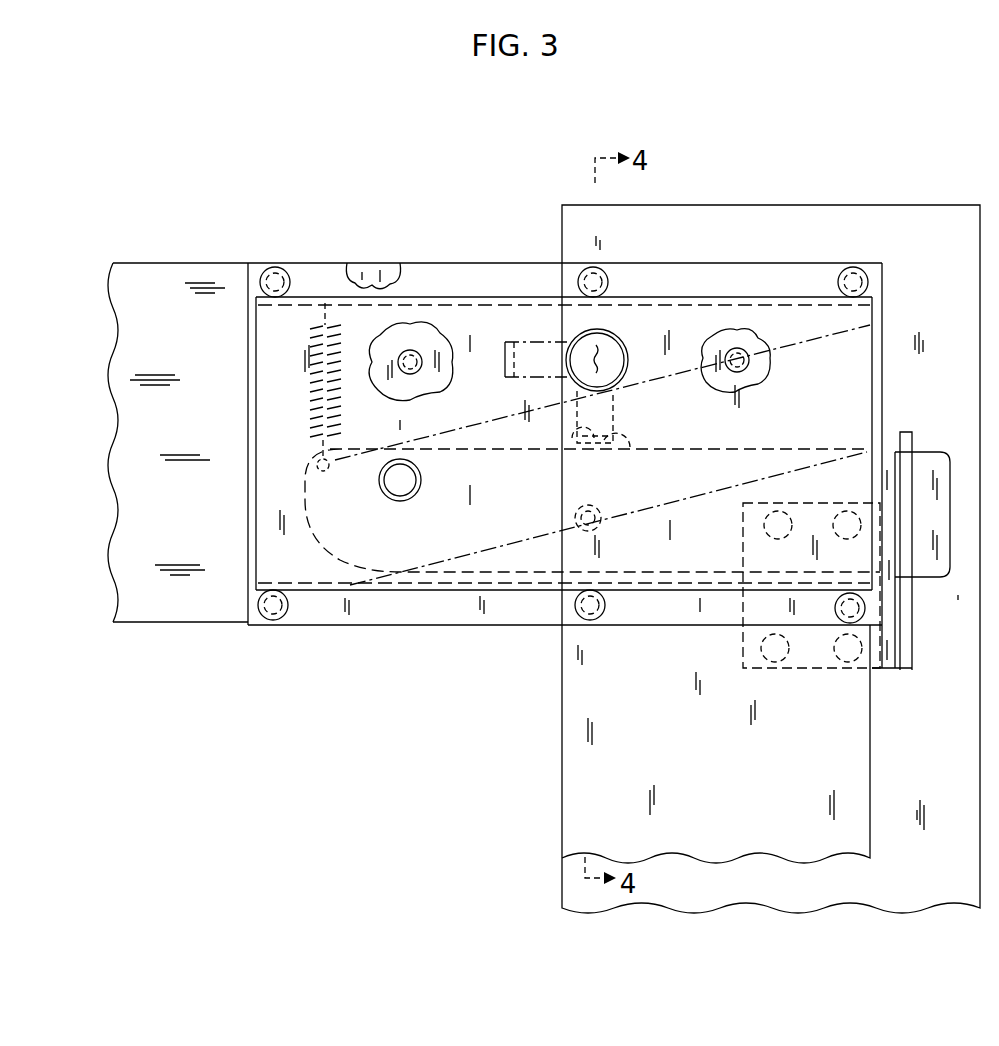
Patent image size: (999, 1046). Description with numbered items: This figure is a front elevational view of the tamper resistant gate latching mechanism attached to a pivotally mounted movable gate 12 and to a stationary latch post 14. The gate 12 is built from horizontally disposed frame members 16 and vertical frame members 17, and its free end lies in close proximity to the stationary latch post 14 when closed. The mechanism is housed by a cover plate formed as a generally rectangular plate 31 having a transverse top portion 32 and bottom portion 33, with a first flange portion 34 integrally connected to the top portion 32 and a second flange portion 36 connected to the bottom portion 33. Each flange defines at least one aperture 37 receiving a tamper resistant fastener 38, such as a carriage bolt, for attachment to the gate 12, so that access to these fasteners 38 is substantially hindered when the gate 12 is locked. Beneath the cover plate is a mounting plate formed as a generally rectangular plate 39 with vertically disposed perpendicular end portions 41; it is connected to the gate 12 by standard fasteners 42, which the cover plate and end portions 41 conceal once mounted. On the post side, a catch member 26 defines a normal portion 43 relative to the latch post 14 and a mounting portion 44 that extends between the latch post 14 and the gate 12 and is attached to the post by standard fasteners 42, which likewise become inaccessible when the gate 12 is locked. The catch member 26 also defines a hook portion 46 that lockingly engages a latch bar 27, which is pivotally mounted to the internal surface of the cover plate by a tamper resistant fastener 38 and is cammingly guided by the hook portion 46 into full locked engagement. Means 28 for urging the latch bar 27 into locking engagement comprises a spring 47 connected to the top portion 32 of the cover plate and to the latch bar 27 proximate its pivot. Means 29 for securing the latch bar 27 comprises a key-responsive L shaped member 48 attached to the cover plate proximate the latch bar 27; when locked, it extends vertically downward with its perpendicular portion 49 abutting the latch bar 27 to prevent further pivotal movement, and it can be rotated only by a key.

The movable gate 12 is at (118, 552).
The stationary latch post 14 is at (770, 212).
The horizontally disposed frame members 16 is at (158, 295).
The vertical frame members 17 is at (580, 755).
The catch member 26 is at (893, 680).
The latch bar 27 is at (335, 545).
The means for urging latch bar into locking engagement 28 is at (305, 380).
The means for securing latch bar into locking engagement 29 is at (630, 369).
The generally rectangular plate 31 is at (285, 492).
The top portion 32 is at (718, 296).
The bottom portion 33 is at (455, 593).
The first flange portion 34 is at (496, 278).
The second flange portion 36 is at (392, 605).
The aperture 37 is at (287, 286).
The tamper resistant fastener 38 is at (268, 269).
The generally rectangular plate 39 is at (372, 278).
The vertically disposed perpendicular end portions 41 is at (250, 346).
The standard fasteners 42 is at (410, 350).
The normal portion 43 is at (906, 652).
The mounting portion 44 is at (743, 650).
The hook portion 46 is at (905, 432).
The spring 47 is at (322, 405).
The key-responsive "L" shaped member 48 is at (627, 440).
The perpendicular portion 49 is at (575, 430).